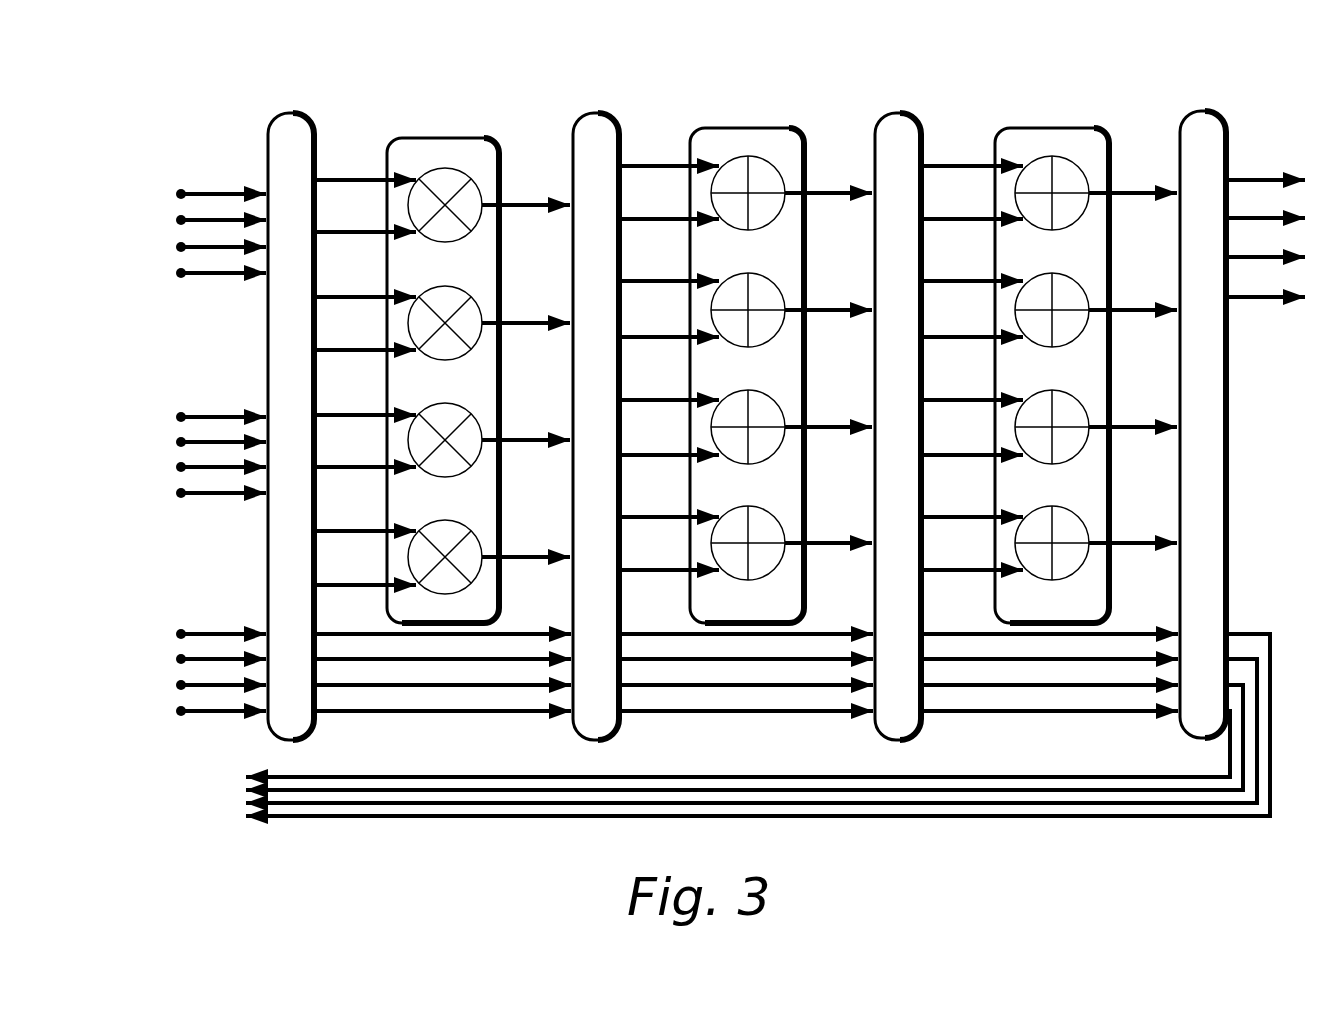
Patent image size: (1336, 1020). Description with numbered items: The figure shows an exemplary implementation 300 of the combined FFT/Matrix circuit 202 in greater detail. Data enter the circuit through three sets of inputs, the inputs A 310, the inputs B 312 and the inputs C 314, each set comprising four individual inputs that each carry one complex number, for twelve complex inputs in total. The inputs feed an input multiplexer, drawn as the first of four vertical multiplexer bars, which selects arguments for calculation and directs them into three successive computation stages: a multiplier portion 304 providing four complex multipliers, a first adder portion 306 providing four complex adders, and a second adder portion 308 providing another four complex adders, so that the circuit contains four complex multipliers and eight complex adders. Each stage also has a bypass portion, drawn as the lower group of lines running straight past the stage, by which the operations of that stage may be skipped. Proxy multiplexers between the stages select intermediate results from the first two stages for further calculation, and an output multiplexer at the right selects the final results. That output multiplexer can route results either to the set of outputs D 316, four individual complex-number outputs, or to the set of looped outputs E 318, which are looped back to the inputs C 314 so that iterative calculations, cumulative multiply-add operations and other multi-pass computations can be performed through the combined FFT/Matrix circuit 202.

The exemplary implementation 300 is at (210, 46).
The combined FFT/Matrix circuit 202 is at (522, 86).
The multiplier portion 304 is at (440, 137).
The adder portion 306 is at (745, 127).
The adder portion 308 is at (1050, 127).
The set of inputs A 310 is at (214, 217).
The set of inputs B 312 is at (218, 437).
The set of inputs C 314 is at (214, 655).
The set of outputs D 316 is at (1266, 268).
The set of looped outputs E 318 is at (771, 708).